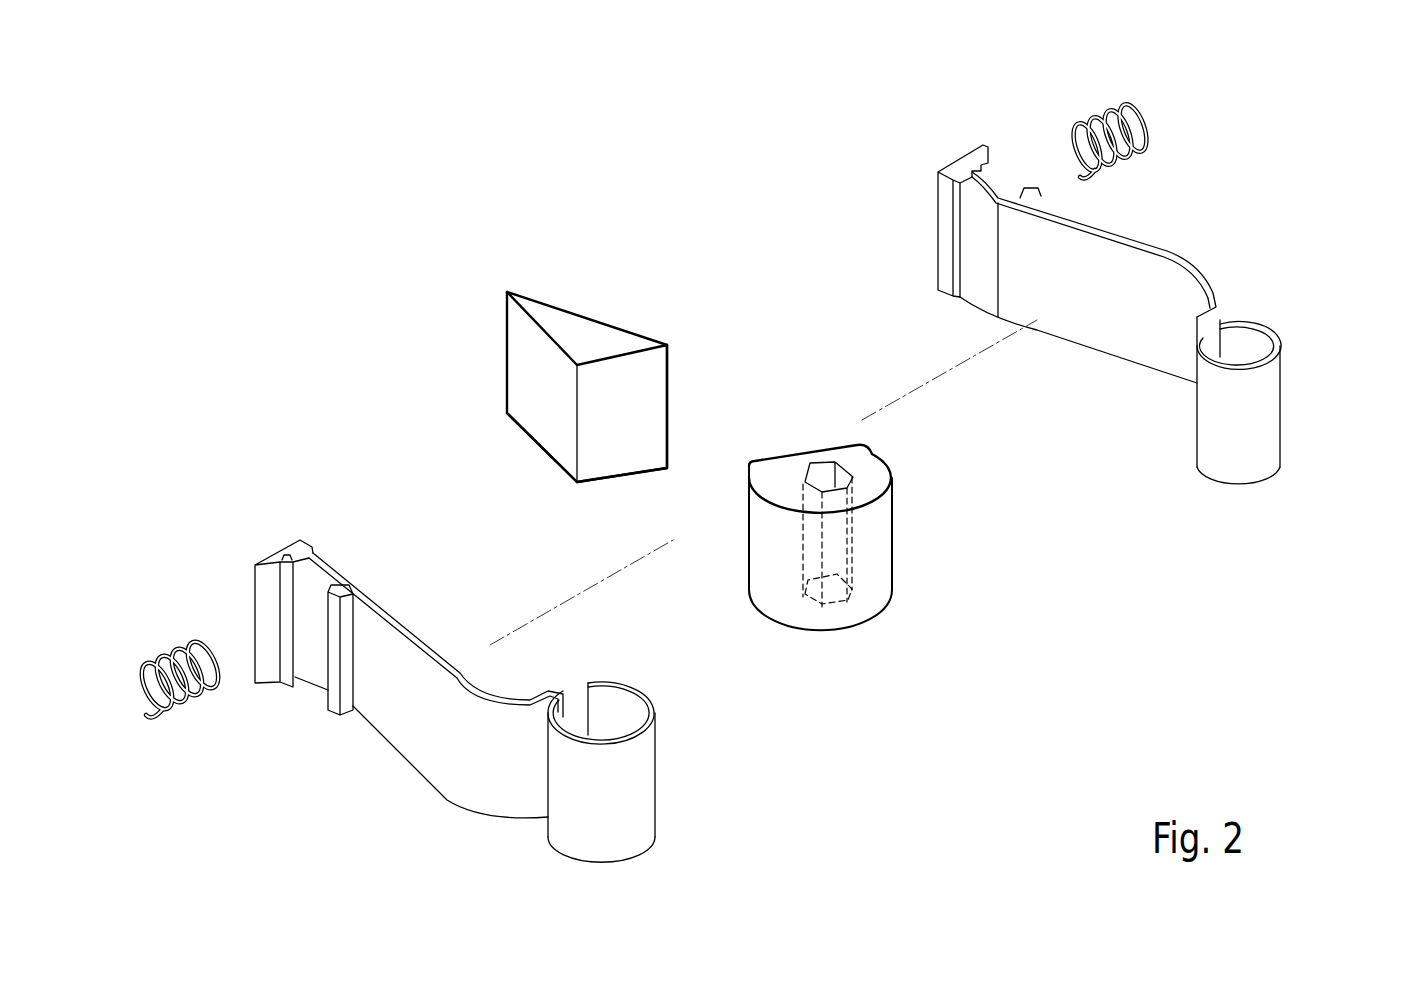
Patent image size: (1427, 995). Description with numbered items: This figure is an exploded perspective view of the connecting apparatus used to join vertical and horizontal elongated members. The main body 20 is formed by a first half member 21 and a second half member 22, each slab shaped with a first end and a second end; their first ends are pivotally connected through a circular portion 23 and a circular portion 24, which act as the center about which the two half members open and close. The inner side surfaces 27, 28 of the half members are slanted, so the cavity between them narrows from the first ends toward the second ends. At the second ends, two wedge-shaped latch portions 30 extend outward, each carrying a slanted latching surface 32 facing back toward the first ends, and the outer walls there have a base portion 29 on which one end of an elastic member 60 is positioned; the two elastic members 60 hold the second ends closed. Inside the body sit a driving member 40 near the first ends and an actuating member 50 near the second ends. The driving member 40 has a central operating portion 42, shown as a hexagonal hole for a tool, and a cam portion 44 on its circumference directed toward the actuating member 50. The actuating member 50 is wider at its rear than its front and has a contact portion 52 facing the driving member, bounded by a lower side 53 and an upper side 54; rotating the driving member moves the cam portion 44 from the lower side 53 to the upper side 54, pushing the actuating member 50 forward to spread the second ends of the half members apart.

The main body 20 is at (1301, 141).
The first half member 21 is at (1185, 247).
The second half member 22 is at (433, 747).
The circular portion 23 is at (1262, 403).
The circular portion 24 is at (643, 802).
The inner side surface 27 is at (1127, 323).
The inner side surface 28 is at (403, 623).
The base portion 29 is at (313, 647).
The latch portion 30 is at (258, 563).
The slanted latching surface 32 is at (270, 611).
The driving member 40 is at (903, 612).
The operating portion 42 is at (853, 477).
The cam portion 44 is at (758, 465).
The actuating member 50 is at (563, 292).
The contact portion 52 is at (628, 430).
The lower side 53 is at (583, 413).
The upper side 54 is at (672, 407).
The elastic member 60 is at (178, 710).